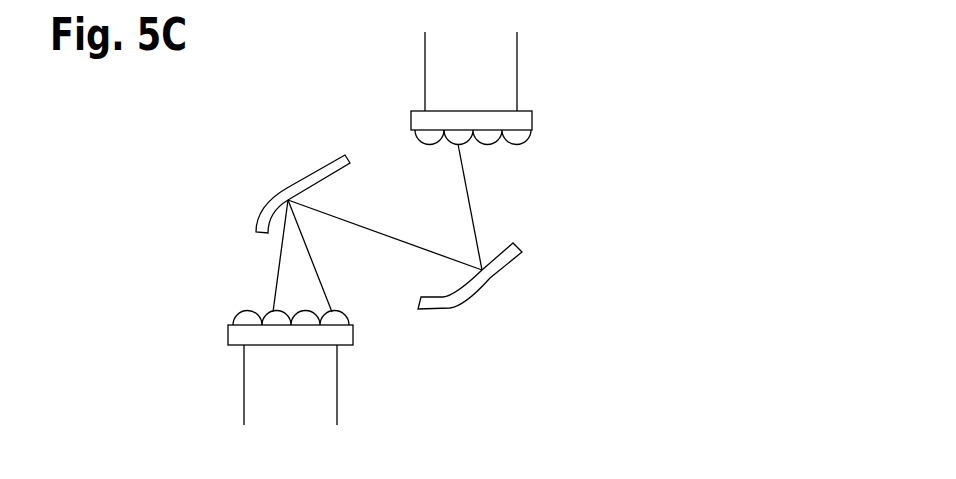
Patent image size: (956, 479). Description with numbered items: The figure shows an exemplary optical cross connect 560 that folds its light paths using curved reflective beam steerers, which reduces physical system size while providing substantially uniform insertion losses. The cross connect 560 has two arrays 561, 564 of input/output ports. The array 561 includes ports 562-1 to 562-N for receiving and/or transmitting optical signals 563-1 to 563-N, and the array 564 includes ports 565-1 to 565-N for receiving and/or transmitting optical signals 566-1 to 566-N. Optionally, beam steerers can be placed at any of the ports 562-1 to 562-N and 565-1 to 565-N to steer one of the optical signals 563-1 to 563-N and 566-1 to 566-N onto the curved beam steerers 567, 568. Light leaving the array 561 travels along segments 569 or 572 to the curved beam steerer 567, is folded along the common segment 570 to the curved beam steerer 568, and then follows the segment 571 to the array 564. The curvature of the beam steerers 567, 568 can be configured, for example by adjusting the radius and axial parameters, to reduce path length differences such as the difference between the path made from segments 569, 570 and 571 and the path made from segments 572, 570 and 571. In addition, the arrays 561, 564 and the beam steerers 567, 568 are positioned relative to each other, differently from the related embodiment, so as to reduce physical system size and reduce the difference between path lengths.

The cross connect 560 is at (720, 199).
The array 561 is at (208, 333).
The port 562-1 is at (235, 318).
The port 562-N is at (350, 318).
The optical signal 563-1 is at (244, 403).
The optical signal 563-N is at (337, 404).
The array 564 is at (555, 118).
The port 565-1 is at (418, 137).
The port 565-N is at (518, 145).
The optical signal 566-1 is at (425, 57).
The optical signal 566-N is at (517, 63).
The curved beam steerer 567 is at (320, 168).
The curved beam steerer 568 is at (513, 263).
The segment 569 is at (280, 255).
The segment 570 is at (400, 238).
The segment 571 is at (473, 217).
The segment 572 is at (317, 262).